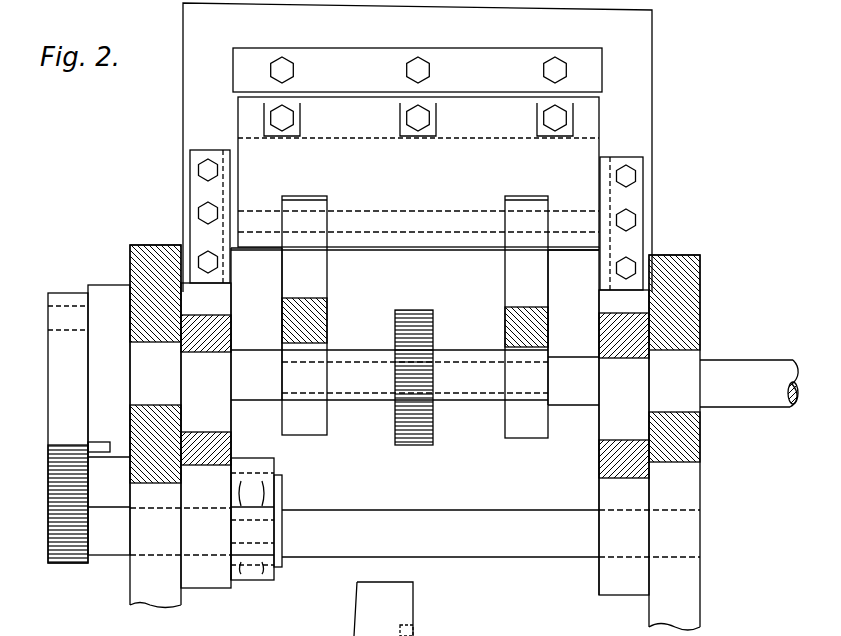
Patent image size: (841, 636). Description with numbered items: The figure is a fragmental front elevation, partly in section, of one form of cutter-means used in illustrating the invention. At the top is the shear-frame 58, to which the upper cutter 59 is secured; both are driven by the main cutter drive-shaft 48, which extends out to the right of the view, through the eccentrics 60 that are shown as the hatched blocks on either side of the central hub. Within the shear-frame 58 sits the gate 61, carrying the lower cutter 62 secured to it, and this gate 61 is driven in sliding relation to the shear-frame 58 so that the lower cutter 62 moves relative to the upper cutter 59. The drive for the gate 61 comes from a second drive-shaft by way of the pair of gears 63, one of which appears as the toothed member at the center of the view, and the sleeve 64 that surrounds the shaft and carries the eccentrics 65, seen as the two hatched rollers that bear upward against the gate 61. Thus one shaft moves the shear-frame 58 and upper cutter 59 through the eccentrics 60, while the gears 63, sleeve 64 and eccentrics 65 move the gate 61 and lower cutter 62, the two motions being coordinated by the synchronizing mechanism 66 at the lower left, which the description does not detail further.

The main cutter drive-shaft 48 is at (757, 409).
The shear-frame 58 is at (655, 125).
The upper cutter 59 is at (480, 65).
The eccentrics 60 is at (222, 421).
The gate 61 is at (402, 253).
The lower cutter 62 is at (460, 143).
The pair of gears 63 is at (415, 449).
The sleeve 64 is at (372, 343).
The eccentrics 65 is at (305, 436).
The synchronizing mechanism 66 is at (50, 475).